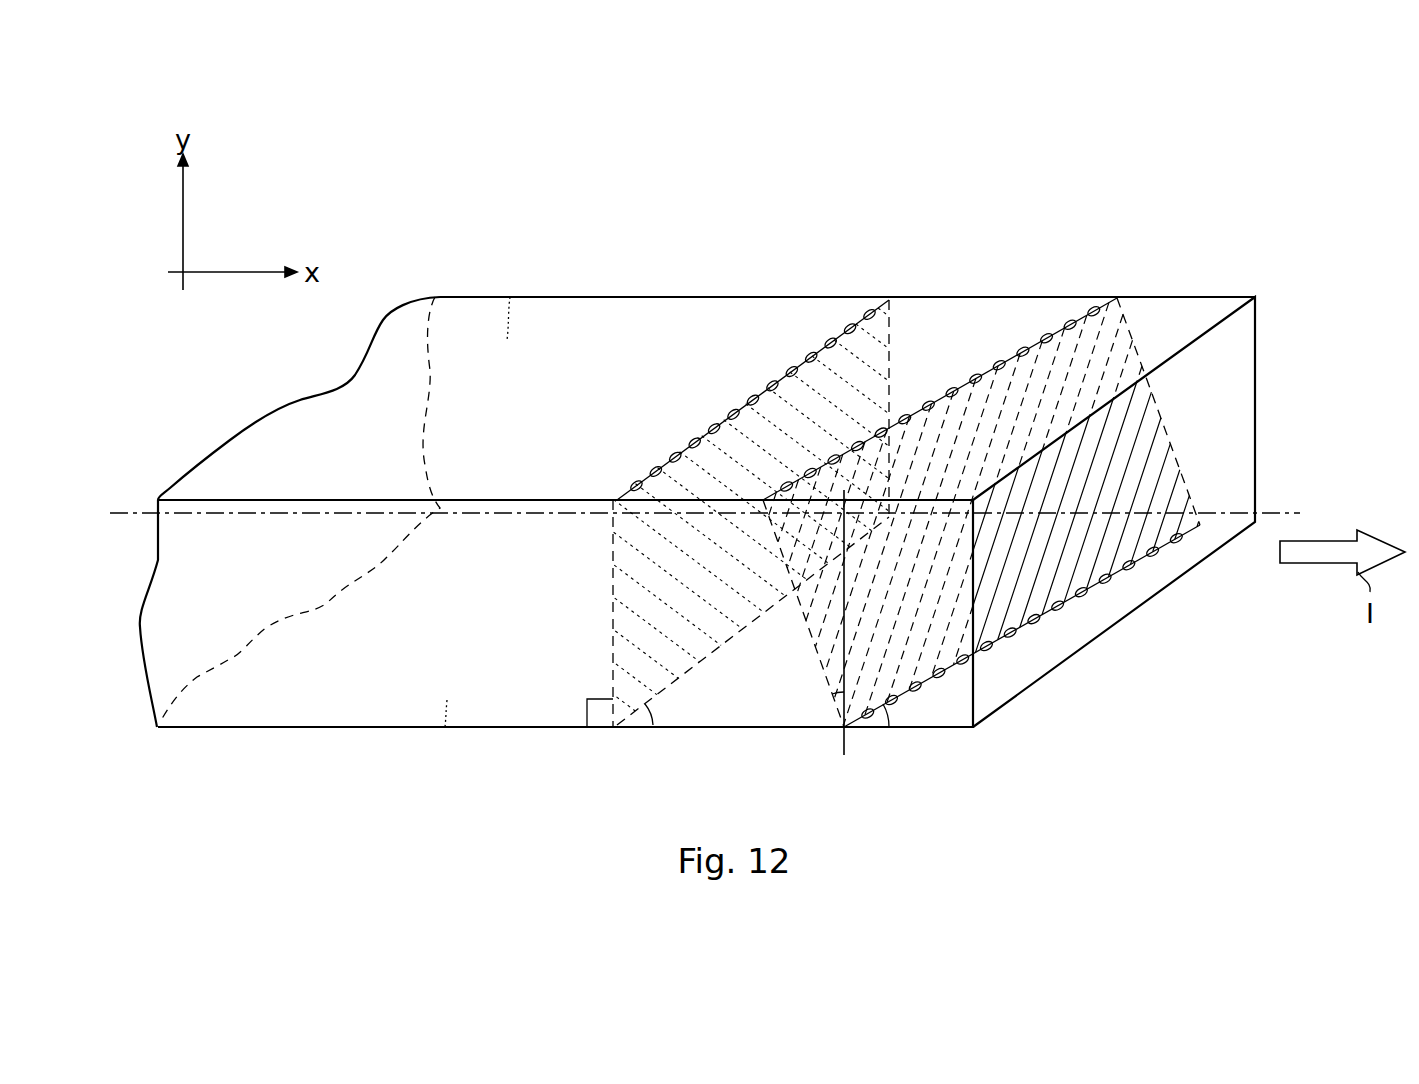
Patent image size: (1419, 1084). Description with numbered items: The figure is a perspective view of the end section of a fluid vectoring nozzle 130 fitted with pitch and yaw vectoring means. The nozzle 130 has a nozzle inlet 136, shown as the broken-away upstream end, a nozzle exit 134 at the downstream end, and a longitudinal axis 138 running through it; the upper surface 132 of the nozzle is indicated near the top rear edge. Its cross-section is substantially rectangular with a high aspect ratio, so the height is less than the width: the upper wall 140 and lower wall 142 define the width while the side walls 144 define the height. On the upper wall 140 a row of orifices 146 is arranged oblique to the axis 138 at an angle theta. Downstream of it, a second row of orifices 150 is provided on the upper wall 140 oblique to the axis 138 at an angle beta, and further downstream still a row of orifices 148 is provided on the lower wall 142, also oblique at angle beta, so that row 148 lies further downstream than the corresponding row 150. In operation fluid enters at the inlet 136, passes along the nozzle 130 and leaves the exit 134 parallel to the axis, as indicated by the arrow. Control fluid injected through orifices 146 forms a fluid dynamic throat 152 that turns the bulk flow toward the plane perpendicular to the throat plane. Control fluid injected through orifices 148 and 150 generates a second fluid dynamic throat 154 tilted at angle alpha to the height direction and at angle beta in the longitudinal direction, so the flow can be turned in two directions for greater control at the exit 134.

The fluid vectoring nozzle 130 is at (632, 240).
The top surface 132 is at (690, 297).
The nozzle exit 134 is at (1312, 303).
The nozzle inlet 136 is at (207, 437).
The longitudinal axis 138 is at (131, 517).
The upper wall 140 is at (760, 325).
The lower wall 142 is at (440, 727).
The side walls 144 is at (510, 297).
The row of orifices 146 is at (889, 298).
The row of orifices 148 is at (1138, 560).
The row of orifices 150 is at (1105, 297).
The fluid dynamic throat 152 is at (677, 653).
The fluid dynamic throat 154 is at (1020, 608).